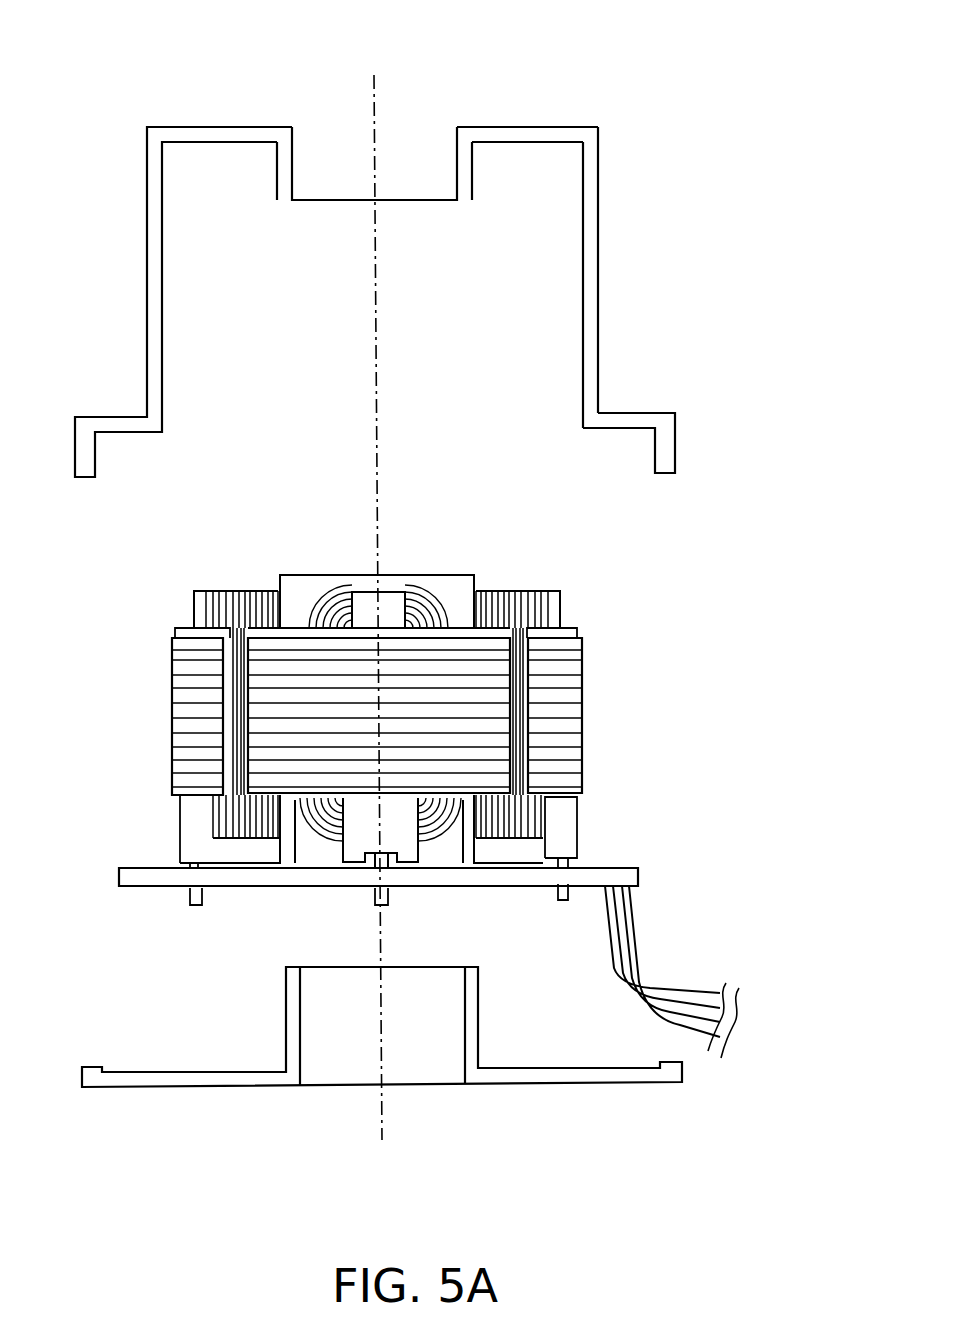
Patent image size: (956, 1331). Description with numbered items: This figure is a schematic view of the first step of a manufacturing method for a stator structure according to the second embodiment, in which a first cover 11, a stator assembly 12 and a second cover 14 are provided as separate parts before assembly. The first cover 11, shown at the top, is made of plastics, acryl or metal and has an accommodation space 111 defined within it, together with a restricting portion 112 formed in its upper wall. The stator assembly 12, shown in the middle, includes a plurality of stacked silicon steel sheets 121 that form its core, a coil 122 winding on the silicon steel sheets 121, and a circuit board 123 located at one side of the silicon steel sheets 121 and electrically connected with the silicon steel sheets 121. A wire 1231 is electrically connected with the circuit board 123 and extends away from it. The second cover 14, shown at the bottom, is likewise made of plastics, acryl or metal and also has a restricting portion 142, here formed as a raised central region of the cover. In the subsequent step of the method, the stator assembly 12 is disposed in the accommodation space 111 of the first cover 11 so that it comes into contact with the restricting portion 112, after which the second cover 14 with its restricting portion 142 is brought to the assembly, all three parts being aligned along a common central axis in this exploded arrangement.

The first cover 11 is at (389, 242).
The accommodation space 111 is at (556, 251).
The restricting portion 112 is at (282, 181).
The stator assembly 12 is at (463, 816).
The silicon steel sheets 121 is at (565, 696).
The coil 122 is at (535, 600).
The circuit board 123 is at (447, 948).
The wire 1231 is at (695, 995).
The second cover 14 is at (382, 1081).
The restricting portion 142 is at (296, 1032).